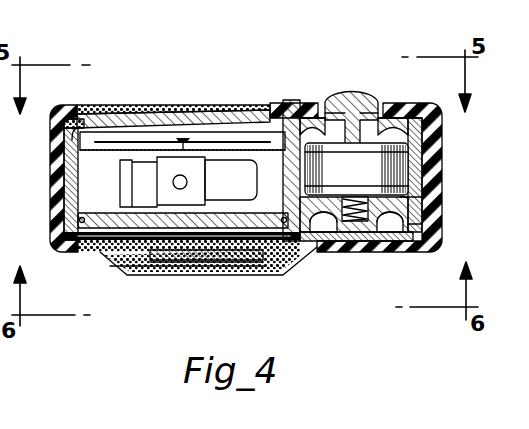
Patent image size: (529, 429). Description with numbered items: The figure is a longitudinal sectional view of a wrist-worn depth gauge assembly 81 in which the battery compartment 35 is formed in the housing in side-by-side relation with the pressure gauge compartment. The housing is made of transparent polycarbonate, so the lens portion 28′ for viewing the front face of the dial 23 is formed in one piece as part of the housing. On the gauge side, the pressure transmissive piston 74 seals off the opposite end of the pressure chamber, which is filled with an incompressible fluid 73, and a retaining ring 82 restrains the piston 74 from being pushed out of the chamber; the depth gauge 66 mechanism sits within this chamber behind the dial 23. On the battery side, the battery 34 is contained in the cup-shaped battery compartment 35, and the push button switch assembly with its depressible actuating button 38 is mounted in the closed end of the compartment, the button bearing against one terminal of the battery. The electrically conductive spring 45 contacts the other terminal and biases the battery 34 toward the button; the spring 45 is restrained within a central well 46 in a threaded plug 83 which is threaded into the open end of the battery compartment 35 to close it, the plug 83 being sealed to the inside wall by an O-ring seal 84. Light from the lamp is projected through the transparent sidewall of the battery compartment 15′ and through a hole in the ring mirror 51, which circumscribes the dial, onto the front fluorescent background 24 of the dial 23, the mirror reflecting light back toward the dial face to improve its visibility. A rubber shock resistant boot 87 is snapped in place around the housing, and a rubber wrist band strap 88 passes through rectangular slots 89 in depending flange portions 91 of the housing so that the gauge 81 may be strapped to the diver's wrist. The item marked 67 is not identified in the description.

The dial 23 is at (120, 150).
The lens portion 28′ is at (166, 106).
The fluorescent background of the dial face 24 is at (200, 150).
The depth gauge assembly 81 is at (230, 96).
The ring mirror 51 is at (266, 116).
The actuating button 38 is at (330, 96).
The rubber shock resistant boot 87 is at (418, 116).
The transparent sidewall of the battery compartment 15′ is at (68, 160).
The incompressible fluid 73 is at (66, 196).
The pressure transmissive piston 74 is at (95, 218).
The switch box 67 is at (246, 192).
The battery 34 is at (368, 180).
The battery compartment 35 is at (414, 196).
The O-ring seal 84 is at (414, 224).
The central well 46 is at (356, 238).
The spring 45 is at (362, 232).
The threaded plug 83 is at (402, 240).
The retaining ring 82 is at (124, 268).
The rubber wrist band strap 88 is at (165, 262).
The depending flange portions 91 is at (207, 265).
The rectangular slots 89 is at (233, 268).
The depth gauge assembly 66 is at (215, 252).